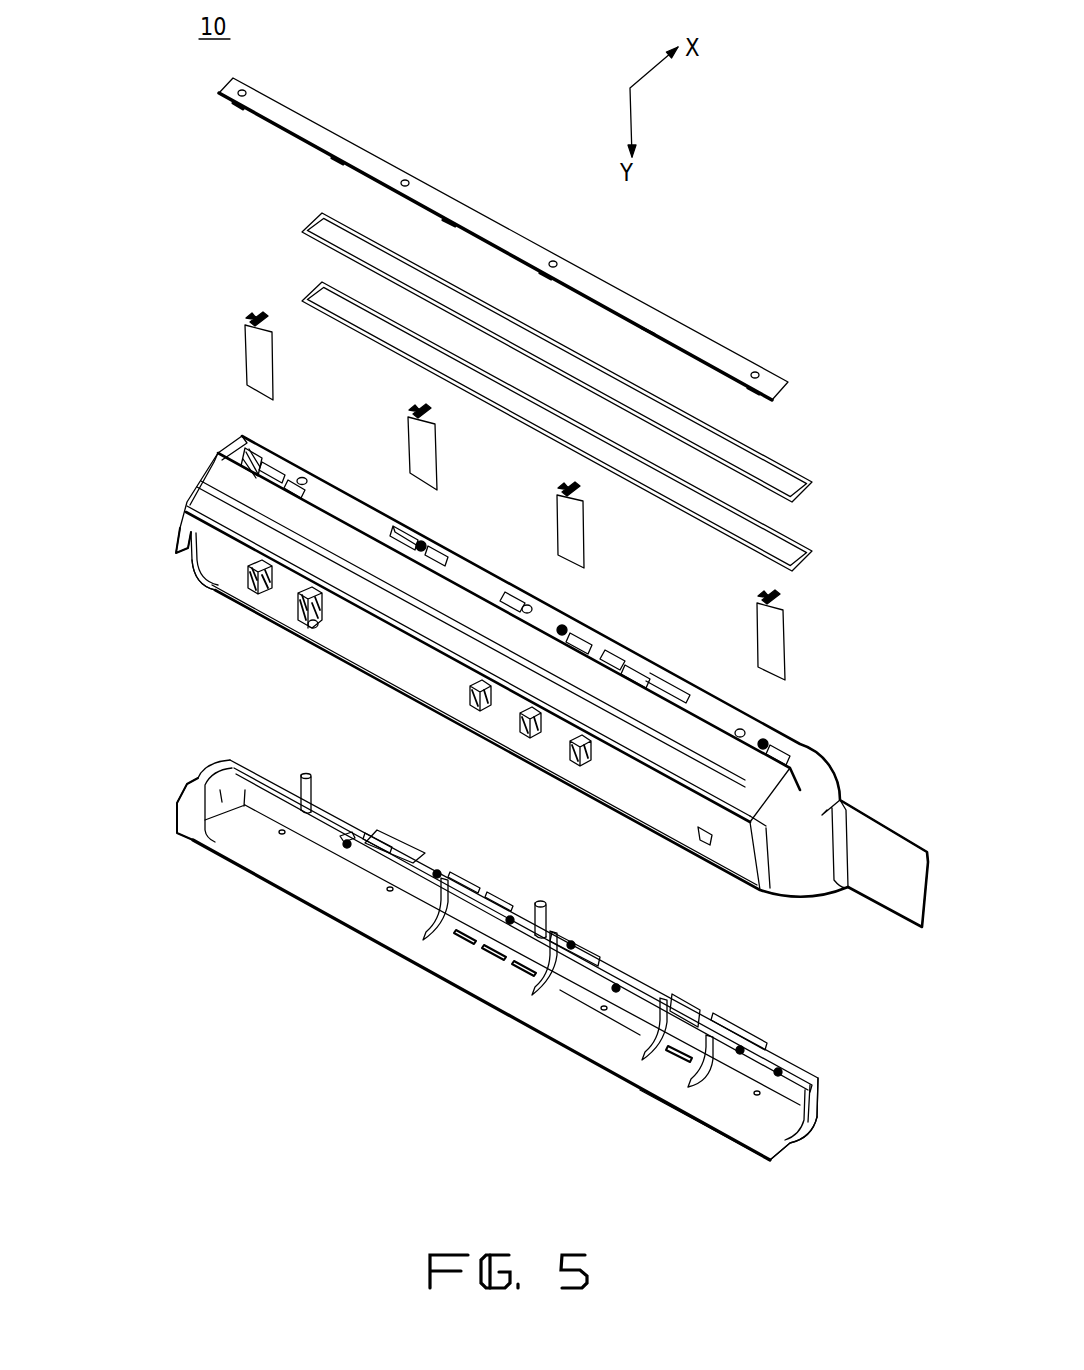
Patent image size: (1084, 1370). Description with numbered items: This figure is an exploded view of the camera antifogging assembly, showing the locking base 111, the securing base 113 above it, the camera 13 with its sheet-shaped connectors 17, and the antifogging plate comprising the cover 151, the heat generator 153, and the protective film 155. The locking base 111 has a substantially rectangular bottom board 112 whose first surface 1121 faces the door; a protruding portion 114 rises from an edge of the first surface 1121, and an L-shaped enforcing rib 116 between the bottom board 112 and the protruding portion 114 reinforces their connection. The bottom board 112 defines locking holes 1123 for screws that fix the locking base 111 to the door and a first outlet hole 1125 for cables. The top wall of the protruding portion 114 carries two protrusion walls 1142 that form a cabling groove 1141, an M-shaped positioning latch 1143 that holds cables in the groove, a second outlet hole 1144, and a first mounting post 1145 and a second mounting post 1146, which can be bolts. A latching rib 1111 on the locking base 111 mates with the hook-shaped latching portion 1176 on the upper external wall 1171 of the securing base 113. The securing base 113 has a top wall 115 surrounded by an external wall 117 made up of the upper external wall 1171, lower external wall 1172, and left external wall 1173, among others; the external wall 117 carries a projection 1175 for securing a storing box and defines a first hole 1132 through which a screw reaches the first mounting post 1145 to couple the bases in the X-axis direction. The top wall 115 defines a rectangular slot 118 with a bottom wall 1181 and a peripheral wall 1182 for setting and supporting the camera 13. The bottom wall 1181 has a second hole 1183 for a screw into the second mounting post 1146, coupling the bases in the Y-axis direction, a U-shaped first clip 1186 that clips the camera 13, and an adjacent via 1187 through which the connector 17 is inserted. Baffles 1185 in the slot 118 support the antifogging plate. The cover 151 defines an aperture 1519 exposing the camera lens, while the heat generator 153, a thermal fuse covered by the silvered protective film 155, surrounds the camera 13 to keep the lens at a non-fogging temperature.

The cover 151 is at (667, 260).
The aperture 1519 is at (797, 358).
The heat generator 153 is at (853, 477).
The protective film 155 is at (865, 546).
The connector 17 is at (823, 638).
The camera 13 is at (847, 593).
The securing base 113 is at (110, 488).
The upper external wall 1171 is at (193, 490).
The latching portion 1176 is at (170, 537).
The external wall 117 is at (158, 603).
The projection 1175 is at (247, 582).
The first hole 1132 is at (313, 625).
The left external wall 1173 is at (385, 663).
The first clip 1186 is at (418, 528).
The via 1187 is at (440, 550).
The baffles 1185 is at (522, 600).
The second hole 1183 is at (538, 605).
The bottom wall 1181 is at (647, 598).
The peripheral wall 1182 is at (653, 675).
The slot 118 is at (742, 612).
The top wall 115 is at (880, 753).
The lower external wall 1172 is at (818, 882).
The locking base 111 is at (113, 817).
The latching rib 1111 is at (188, 788).
The first mounting post 1145 is at (347, 845).
The second mounting post 1146 is at (590, 878).
The cabling groove 1141 is at (383, 837).
The protrusion walls 1142 is at (397, 845).
The positioning latch 1143 is at (573, 948).
The second outlet hole 1144 is at (730, 980).
The enforcing rib 116 is at (650, 1055).
The first outlet hole 1125 is at (492, 953).
The locking holes 1123 is at (603, 1008).
The first surface 1121 is at (710, 1108).
The bottom board 112 is at (797, 1170).
The protruding portion 114 is at (795, 1100).